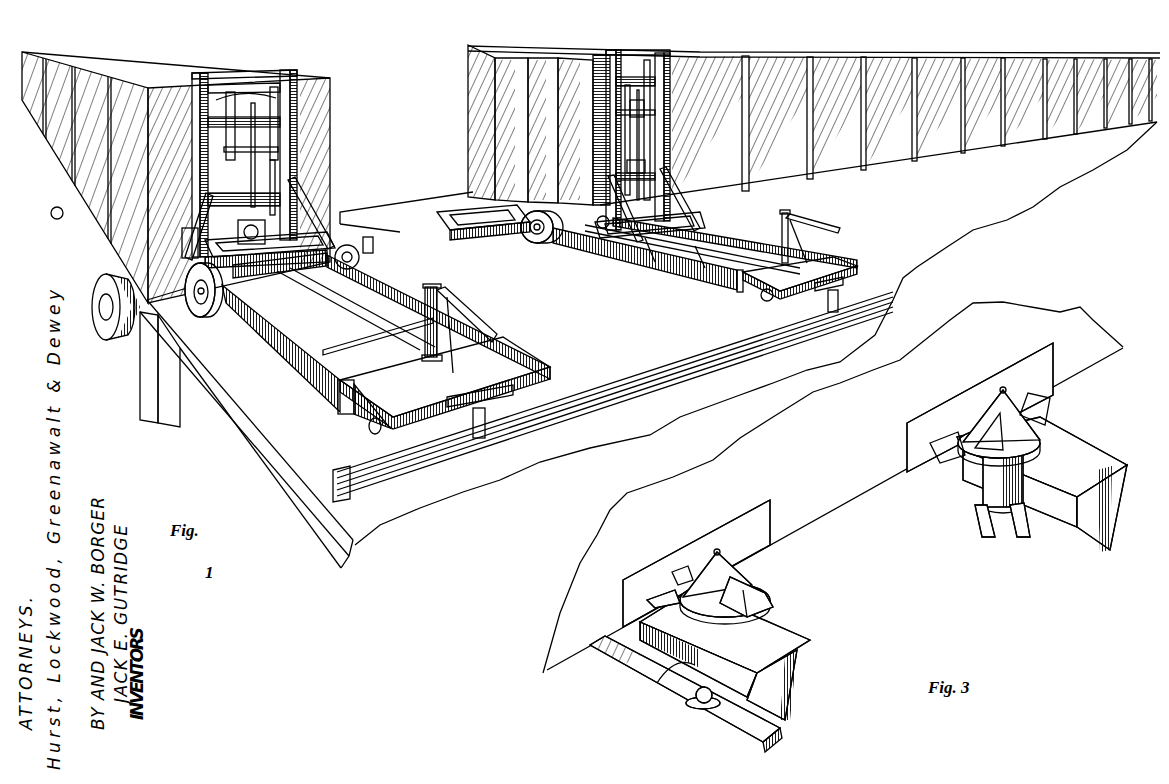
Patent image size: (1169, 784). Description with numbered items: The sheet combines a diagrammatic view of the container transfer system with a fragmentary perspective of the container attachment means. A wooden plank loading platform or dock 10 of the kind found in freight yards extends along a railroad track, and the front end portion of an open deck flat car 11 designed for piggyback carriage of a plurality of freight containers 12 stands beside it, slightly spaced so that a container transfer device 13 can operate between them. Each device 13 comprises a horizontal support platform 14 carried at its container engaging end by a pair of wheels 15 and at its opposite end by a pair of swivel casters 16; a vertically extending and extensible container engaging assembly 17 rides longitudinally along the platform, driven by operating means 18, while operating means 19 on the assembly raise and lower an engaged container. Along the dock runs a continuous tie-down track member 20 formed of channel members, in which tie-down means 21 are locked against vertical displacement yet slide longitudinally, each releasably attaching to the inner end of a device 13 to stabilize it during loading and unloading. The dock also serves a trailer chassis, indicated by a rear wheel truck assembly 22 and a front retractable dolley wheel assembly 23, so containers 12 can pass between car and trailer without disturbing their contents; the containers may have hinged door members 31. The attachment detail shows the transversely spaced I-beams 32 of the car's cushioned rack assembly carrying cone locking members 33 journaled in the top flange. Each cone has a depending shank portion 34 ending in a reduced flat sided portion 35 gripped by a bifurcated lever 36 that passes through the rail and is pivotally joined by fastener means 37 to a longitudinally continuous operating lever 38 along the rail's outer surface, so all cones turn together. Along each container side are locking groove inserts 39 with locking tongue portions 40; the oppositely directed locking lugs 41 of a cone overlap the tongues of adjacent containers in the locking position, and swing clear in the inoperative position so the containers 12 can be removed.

In FIG. 1, the loading platform or dock 10 is at (622, 316).
In FIG. 1, the open deck flat car 11 is at (432, 144).
In FIG. 1, the freight container 12 is at (563, 52).
In FIG. 3, the freight container 12 is at (837, 496).
In FIG. 1, the container transfer device 13 is at (436, 146).
In FIG. 1, the horizontal support platform 14 is at (268, 353).
In FIG. 1, the wheels 15 is at (199, 308).
In FIG. 1, the swivel casters 16 is at (371, 437).
In FIG. 1, the container engaging assembly 17 is at (300, 128).
In FIG. 1, the operating means 18 is at (463, 310).
In FIG. 1, the operating means 19 is at (231, 220).
In FIG. 1, the tie-down track member 20 is at (394, 480).
In FIG. 1, the tie-down means 21 is at (520, 407).
In FIG. 1, the rear wheel truck assembly 22 is at (95, 285).
In FIG. 1, the front retractable dolley wheel assembly 23 is at (52, 216).
In FIG. 1, the hinged door members 31 is at (540, 62).
In FIG. 1, the I-beams 32 is at (467, 210).
In FIG. 3, the I-beams 32 is at (792, 697).
In FIG. 3, the cone locking member 33 is at (877, 499).
In FIG. 3, the depending shank portion 34 is at (1090, 517).
In FIG. 3, the reduced flat sided portion 35 is at (982, 530).
In FIG. 3, the bifurcated lever 36 is at (690, 667).
In FIG. 3, the fastener means 37 is at (693, 693).
In FIG. 3, the operating lever 38 is at (733, 737).
In FIG. 3, the locking groove insert 39 is at (748, 518).
In FIG. 3, the locking tongue portion 40 is at (653, 595).
In FIG. 3, the locking lugs 41 is at (685, 567).